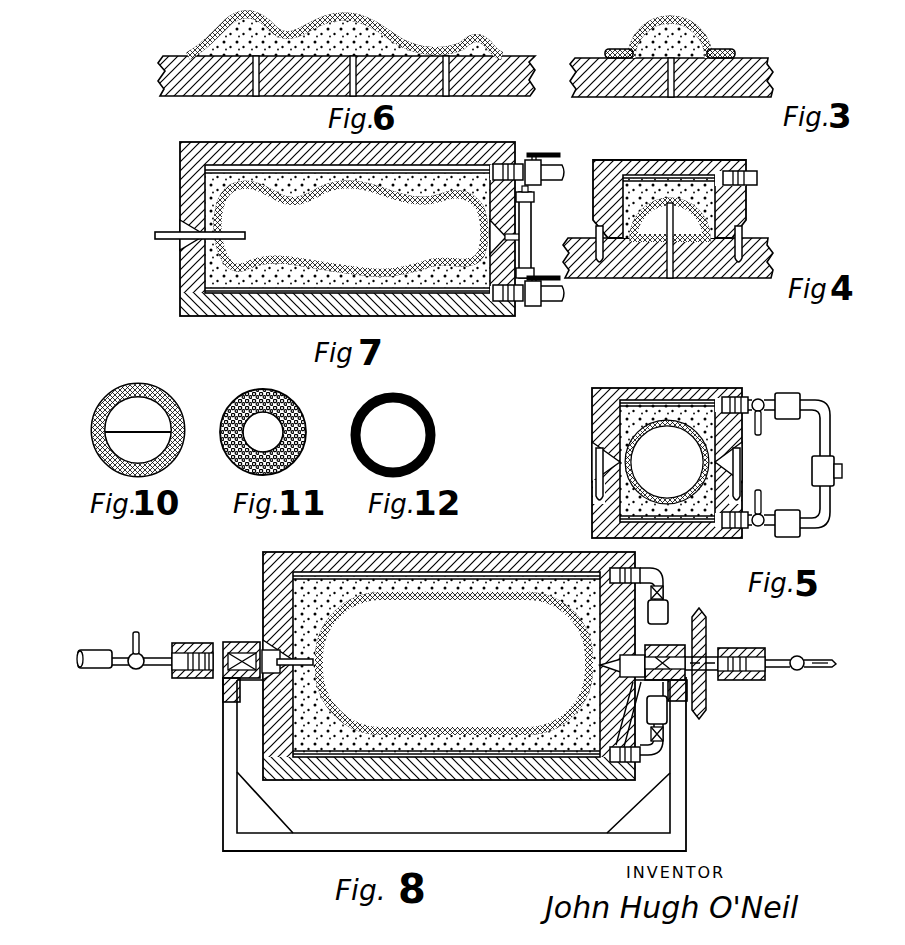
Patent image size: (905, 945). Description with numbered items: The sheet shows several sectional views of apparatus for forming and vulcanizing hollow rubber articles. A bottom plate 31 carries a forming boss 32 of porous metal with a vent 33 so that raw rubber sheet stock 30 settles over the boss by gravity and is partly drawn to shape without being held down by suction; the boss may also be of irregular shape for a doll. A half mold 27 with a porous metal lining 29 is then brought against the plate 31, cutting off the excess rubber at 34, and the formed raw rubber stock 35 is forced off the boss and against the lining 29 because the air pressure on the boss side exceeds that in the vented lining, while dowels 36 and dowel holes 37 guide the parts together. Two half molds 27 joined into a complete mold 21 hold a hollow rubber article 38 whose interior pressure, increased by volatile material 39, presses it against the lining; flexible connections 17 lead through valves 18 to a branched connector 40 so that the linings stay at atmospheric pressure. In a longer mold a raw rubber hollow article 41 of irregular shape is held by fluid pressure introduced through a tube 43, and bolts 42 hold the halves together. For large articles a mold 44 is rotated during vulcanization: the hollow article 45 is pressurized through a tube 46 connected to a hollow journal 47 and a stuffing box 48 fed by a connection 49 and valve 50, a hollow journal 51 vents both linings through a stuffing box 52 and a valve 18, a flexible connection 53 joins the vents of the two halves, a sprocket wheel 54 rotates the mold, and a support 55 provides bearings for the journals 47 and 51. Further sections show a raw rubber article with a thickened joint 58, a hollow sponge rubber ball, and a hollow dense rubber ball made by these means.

In FIG. 7, the flexible connection 17 is at (548, 176).
In FIG. 5, the flexible connection 17 is at (788, 402).
In FIG. 7, the valve 18 is at (526, 160).
In FIG. 4, the valve 18 is at (736, 178).
In FIG. 5, the valve 18 is at (758, 398).
In FIG. 8, the valve 18 is at (662, 590).
In FIG. 5, the mold 21 is at (636, 538).
In FIG. 7, the half mold 27 is at (448, 143).
In FIG. 4, the half mold 27 is at (678, 160).
In FIG. 5, the half mold 27 is at (633, 390).
In FIG. 8, the half mold 27 is at (438, 552).
In FIG. 7, the porous metal lining 29 is at (212, 182).
In FIG. 4, the porous metal lining 29 is at (641, 180).
In FIG. 5, the porous metal lining 29 is at (700, 410).
In FIG. 8, the porous metal lining 29 is at (568, 592).
In FIG. 6, the sheet stock 30 is at (360, 30).
In FIG. 3, the sheet stock 30 is at (669, 37).
In FIG. 6, the bottom plate 31 is at (176, 66).
In FIG. 3, the bottom plate 31 is at (755, 68).
In FIG. 4, the bottom plate 31 is at (762, 252).
In FIG. 6, the forming boss 32 is at (262, 30).
In FIG. 3, the forming boss 32 is at (668, 44).
In FIG. 4, the forming boss 32 is at (648, 222).
In FIG. 6, the vent 33 is at (256, 84).
In FIG. 3, the vent 33 is at (668, 86).
In FIG. 4, the vent 33 is at (670, 278).
In FIG. 4, the cut-off point of excess raw rubber 34 is at (598, 232).
In FIG. 4, the formed raw rubber stock 35 is at (703, 248).
In FIG. 4, the dowel 36 is at (742, 233).
In FIG. 5, the dowel 36 is at (597, 463).
In FIG. 4, the dowel hole 37 is at (745, 262).
In FIG. 5, the hollow rubber article 38 is at (642, 428).
In FIG. 5, the volatile material 39 is at (655, 497).
In FIG. 5, the branched connector 40 is at (833, 430).
In FIG. 7, the raw rubber hollow article 41 is at (308, 198).
In FIG. 7, the bolt 42 is at (531, 237).
In FIG. 7, the tube 43 is at (162, 232).
In FIG. 8, the mold 44 is at (449, 673).
In FIG. 8, the hollow article 45 is at (402, 690).
In FIG. 8, the tube 46 is at (310, 662).
In FIG. 8, the hollow journal 47 is at (230, 680).
In FIG. 8, the stuffing box 48 is at (178, 680).
In FIG. 8, the connection 49 is at (100, 666).
In FIG. 8, the valve 50 is at (139, 648).
In FIG. 8, the hollow journal 51 is at (690, 652).
In FIG. 8, the stuffing box 52 is at (756, 650).
In FIG. 8, the flexible connection 53 is at (660, 612).
In FIG. 8, the sprocket wheel 54 is at (707, 696).
In FIG. 8, the support 55 is at (676, 823).
In FIG. 10, the joint 58 is at (110, 432).